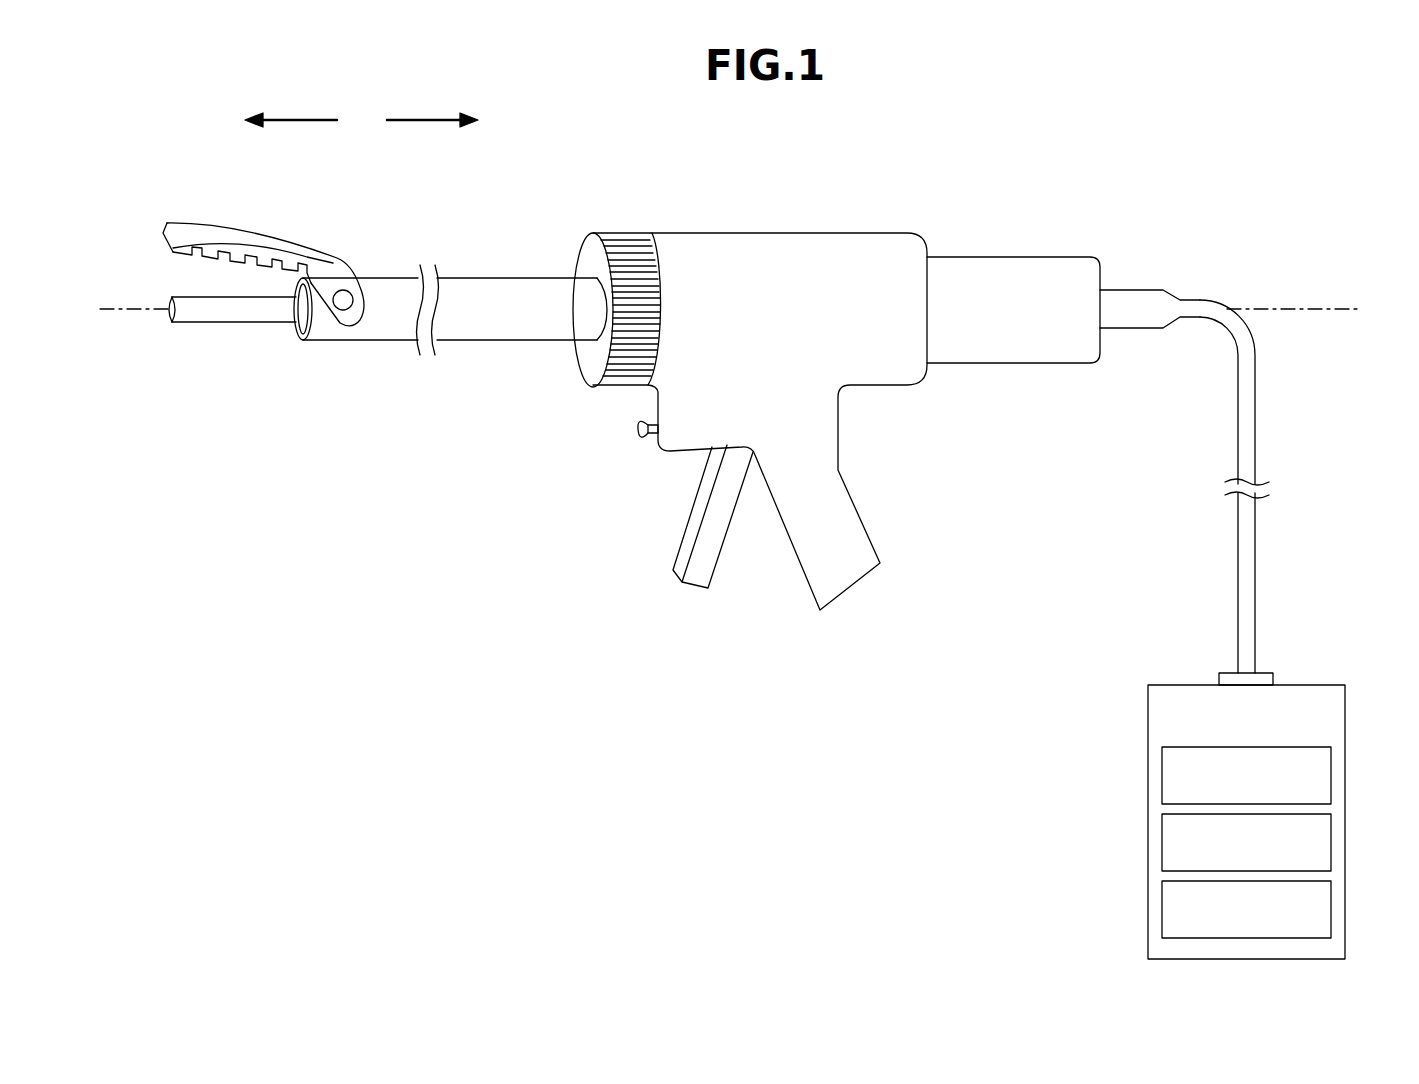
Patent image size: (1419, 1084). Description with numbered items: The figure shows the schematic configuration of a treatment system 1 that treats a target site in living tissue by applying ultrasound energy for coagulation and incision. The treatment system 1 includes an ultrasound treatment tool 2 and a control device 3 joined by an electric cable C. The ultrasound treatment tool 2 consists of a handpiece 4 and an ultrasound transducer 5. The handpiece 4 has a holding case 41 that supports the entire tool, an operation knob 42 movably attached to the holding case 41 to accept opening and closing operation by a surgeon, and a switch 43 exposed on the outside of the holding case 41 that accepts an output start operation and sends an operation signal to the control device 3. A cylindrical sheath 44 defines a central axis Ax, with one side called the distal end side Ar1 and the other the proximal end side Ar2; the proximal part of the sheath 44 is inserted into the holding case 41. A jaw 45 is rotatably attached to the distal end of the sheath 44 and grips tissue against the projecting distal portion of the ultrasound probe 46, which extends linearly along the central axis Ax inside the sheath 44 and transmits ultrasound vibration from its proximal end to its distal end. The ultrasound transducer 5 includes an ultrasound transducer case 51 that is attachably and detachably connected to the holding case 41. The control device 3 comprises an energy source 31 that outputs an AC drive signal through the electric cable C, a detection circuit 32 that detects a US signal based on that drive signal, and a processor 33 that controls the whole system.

The treatment system 1 is at (1104, 119).
The ultrasound treatment tool 2 is at (995, 155).
The control device 3 is at (1323, 685).
The handpiece 4 is at (840, 262).
The ultrasound transducer 5 is at (967, 272).
The energy source 31 is at (1331, 772).
The detection circuit 32 is at (1331, 840).
The processor 33 is at (1331, 909).
The holding case 41 is at (693, 247).
The operation knob 42 is at (707, 552).
The switch 43 is at (642, 435).
The sheath 44 is at (478, 290).
The jaw 45 is at (252, 233).
The ultrasound probe 46 is at (220, 321).
The ultrasound transducer case 51 is at (1037, 270).
The electric cable C is at (1250, 425).
The central axis Ax is at (1322, 308).
The distal end side Ar1 is at (290, 119).
The proximal end side Ar2 is at (430, 119).